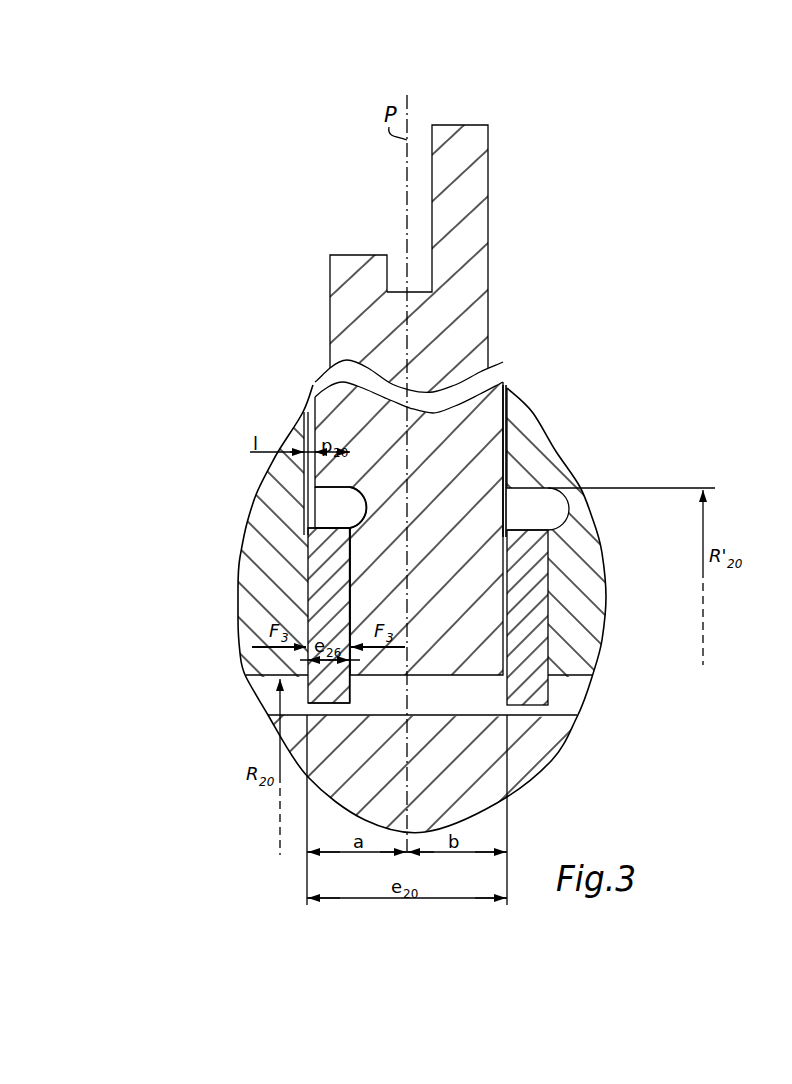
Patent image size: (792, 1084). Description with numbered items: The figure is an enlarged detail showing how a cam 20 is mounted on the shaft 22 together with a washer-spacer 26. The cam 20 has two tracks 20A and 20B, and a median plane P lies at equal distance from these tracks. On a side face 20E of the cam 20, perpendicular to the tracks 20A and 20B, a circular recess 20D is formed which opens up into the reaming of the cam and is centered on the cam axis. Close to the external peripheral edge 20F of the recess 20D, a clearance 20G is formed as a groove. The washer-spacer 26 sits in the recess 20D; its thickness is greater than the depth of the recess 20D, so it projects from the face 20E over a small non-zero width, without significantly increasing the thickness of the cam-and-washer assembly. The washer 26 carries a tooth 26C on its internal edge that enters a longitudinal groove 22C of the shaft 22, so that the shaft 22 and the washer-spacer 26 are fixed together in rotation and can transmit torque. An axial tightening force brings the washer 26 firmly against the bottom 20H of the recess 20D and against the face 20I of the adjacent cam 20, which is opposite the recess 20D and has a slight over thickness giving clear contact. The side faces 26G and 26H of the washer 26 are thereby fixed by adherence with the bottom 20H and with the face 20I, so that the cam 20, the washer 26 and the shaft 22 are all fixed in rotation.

The cam 20 is at (556, 440).
The track 20A is at (361, 250).
The track 20B is at (456, 126).
The recess 20D is at (328, 515).
The side face 20E is at (308, 408).
The external peripheral edge 20F is at (335, 492).
The clearance 20G is at (365, 503).
The bottom of the recess 20H is at (346, 563).
The face of the cam 20I is at (509, 425).
The shaft 22 is at (527, 762).
The longitudinal groove 22C is at (568, 690).
The washer-spacer 26 is at (305, 590).
The tooth 26C is at (350, 703).
The side face of the washer 26G is at (303, 547).
The side face of the washer 26H is at (355, 563).